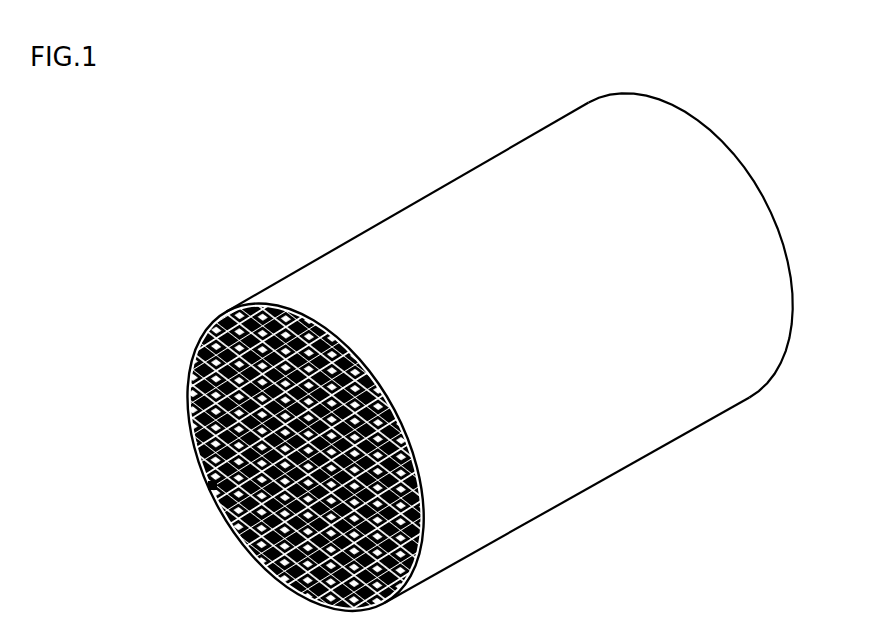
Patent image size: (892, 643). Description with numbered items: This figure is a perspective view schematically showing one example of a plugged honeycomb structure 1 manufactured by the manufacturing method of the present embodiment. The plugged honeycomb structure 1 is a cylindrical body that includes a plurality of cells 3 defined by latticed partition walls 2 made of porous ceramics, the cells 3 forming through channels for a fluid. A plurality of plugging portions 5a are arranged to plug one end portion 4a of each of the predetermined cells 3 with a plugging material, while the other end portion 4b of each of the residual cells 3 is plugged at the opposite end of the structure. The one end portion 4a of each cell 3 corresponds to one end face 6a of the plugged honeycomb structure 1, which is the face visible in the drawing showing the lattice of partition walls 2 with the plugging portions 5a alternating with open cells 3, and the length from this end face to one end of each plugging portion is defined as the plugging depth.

The plugged honeycomb structure 1 is at (478, 368).
The partition walls 2 is at (309, 455).
The cells 3 is at (216, 320).
The one end portion 4a is at (320, 455).
The other end portion 4b is at (778, 232).
The plugging portions 5a is at (211, 486).
The one end face 6a is at (404, 591).